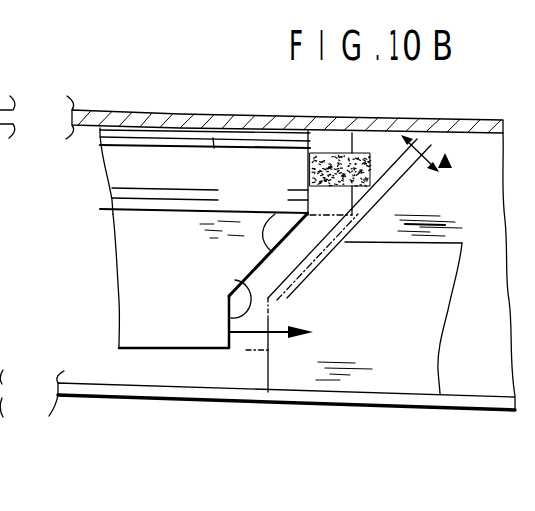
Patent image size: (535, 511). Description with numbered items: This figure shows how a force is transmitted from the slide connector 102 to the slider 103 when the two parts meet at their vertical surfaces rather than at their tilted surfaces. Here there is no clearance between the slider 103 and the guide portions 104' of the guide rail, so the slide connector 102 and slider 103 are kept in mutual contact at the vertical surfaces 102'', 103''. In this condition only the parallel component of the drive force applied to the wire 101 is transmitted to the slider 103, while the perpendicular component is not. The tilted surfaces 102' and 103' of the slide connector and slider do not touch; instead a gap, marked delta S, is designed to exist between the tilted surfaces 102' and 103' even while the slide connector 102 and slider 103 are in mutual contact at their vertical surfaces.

The wire 101 is at (364, 155).
The slide connector 102 is at (225, 113).
The tilted surface 102' is at (226, 172).
The vertical surface 102'' is at (210, 281).
The slider 103 is at (414, 352).
The tilted surface 103' is at (370, 230).
The vertical surface 103'' is at (228, 345).
The guide portions 104' is at (257, 424).